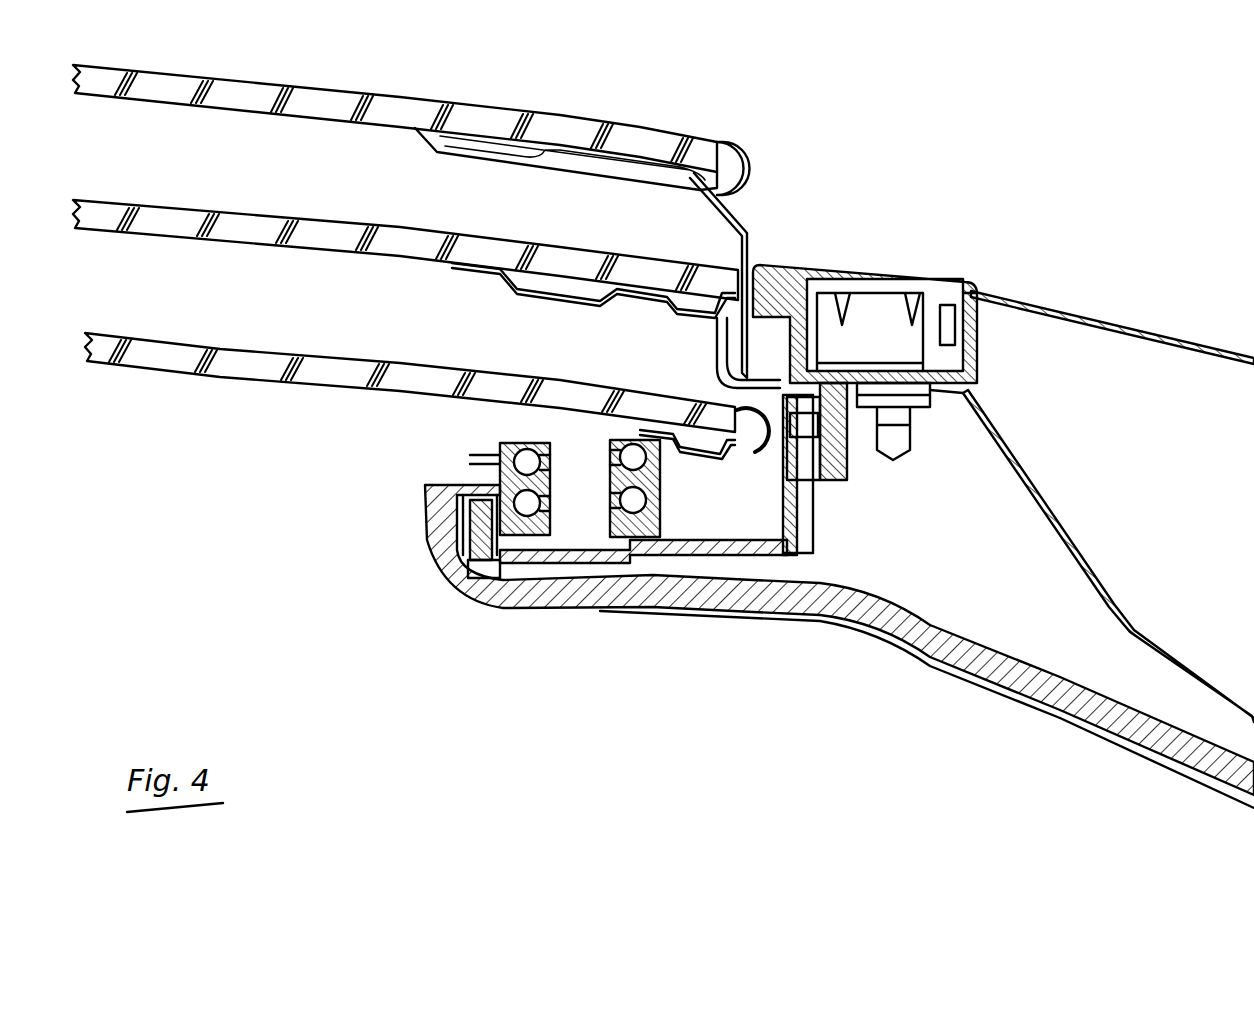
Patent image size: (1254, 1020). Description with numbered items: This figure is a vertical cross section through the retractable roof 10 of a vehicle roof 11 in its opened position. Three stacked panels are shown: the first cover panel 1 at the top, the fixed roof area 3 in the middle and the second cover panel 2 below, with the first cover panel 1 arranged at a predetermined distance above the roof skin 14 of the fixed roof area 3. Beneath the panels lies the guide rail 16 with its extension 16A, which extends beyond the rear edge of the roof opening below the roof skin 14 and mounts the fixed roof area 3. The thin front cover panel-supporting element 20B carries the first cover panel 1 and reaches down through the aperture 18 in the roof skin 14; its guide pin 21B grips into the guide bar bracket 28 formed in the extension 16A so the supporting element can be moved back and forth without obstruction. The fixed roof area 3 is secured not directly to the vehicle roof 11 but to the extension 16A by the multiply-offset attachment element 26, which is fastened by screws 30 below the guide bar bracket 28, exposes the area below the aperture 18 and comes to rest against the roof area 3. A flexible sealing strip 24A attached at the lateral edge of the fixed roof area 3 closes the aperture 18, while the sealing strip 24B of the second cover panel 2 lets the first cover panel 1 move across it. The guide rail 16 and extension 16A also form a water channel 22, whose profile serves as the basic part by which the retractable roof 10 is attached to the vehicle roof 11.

The first cover panel 1 is at (327, 97).
The second cover panel 2 is at (245, 363).
The fixed roof area 3 is at (265, 227).
The retractable roof 10 is at (835, 101).
The vehicle roof 11 is at (1019, 143).
The roof skin 14 is at (1073, 305).
The guide rail 16 is at (797, 268).
The extension 16A is at (790, 527).
The aperture 18 is at (710, 325).
The front cover panel-supporting element 20B is at (747, 233).
The guide pin 21B is at (810, 330).
The water channel 22 is at (697, 550).
The sealing strip 24A is at (733, 258).
The sealing strip 24B is at (757, 455).
The attachment element 26 is at (717, 360).
The guide bar bracket 28 is at (845, 330).
The screw 30 is at (827, 465).